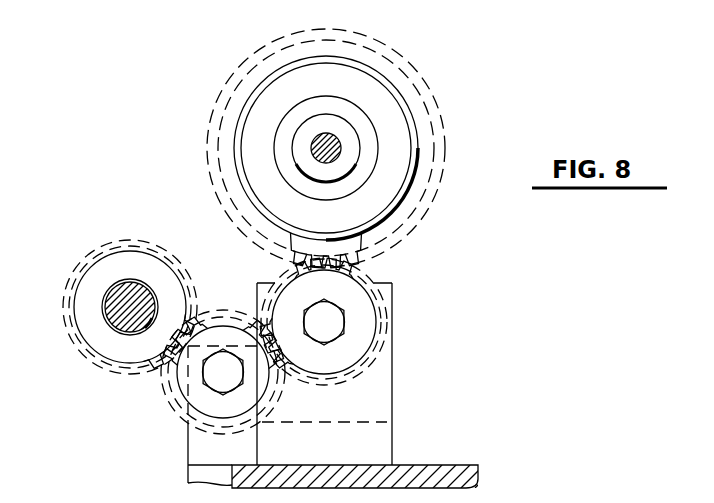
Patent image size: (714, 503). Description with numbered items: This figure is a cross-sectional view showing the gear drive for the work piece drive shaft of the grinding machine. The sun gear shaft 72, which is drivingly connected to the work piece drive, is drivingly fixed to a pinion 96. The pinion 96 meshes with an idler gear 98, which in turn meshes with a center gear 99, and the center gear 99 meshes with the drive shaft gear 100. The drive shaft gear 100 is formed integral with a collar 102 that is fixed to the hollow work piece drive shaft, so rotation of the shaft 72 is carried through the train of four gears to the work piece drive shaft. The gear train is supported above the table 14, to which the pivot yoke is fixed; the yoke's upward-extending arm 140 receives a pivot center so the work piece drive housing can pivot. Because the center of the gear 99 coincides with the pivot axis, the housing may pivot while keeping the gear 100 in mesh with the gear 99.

The table 14 is at (435, 466).
The sun gear shaft 72 is at (125, 312).
The pinion 96 is at (80, 290).
The idler gear 98 is at (198, 395).
The center gear 99 is at (362, 342).
The drive shaft gear 100 is at (413, 219).
The collar 102 is at (423, 132).
The arm 140 is at (377, 398).